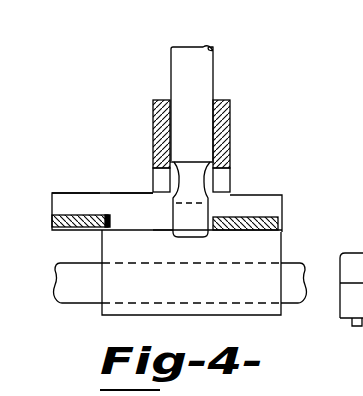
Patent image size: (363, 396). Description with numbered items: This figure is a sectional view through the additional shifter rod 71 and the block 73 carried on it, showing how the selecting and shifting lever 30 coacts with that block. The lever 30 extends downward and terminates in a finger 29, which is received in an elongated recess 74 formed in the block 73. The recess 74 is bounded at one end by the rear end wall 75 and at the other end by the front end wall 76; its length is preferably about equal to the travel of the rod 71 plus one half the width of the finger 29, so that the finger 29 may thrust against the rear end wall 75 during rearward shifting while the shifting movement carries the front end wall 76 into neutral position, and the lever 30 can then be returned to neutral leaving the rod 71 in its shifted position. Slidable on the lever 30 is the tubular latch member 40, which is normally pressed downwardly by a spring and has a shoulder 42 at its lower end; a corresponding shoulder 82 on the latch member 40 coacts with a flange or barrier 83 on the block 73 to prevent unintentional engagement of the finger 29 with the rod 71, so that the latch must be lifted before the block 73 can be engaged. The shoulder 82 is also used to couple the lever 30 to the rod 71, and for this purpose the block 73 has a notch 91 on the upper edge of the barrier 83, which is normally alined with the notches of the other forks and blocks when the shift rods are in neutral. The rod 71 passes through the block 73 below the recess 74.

The selecting and shifting lever 30 is at (209, 68).
The tubular latch member 40 is at (232, 100).
The shoulder 42 is at (155, 182).
The shoulder 82 is at (228, 186).
The finger 29 is at (206, 215).
The elongated recess 74 is at (127, 230).
The rear end wall 75 is at (242, 215).
The flange or barrier 83 is at (121, 200).
The front end wall 76 is at (107, 214).
The notch 91 is at (167, 200).
The additional shifter rod 71 is at (292, 267).
The block 73 is at (262, 293).